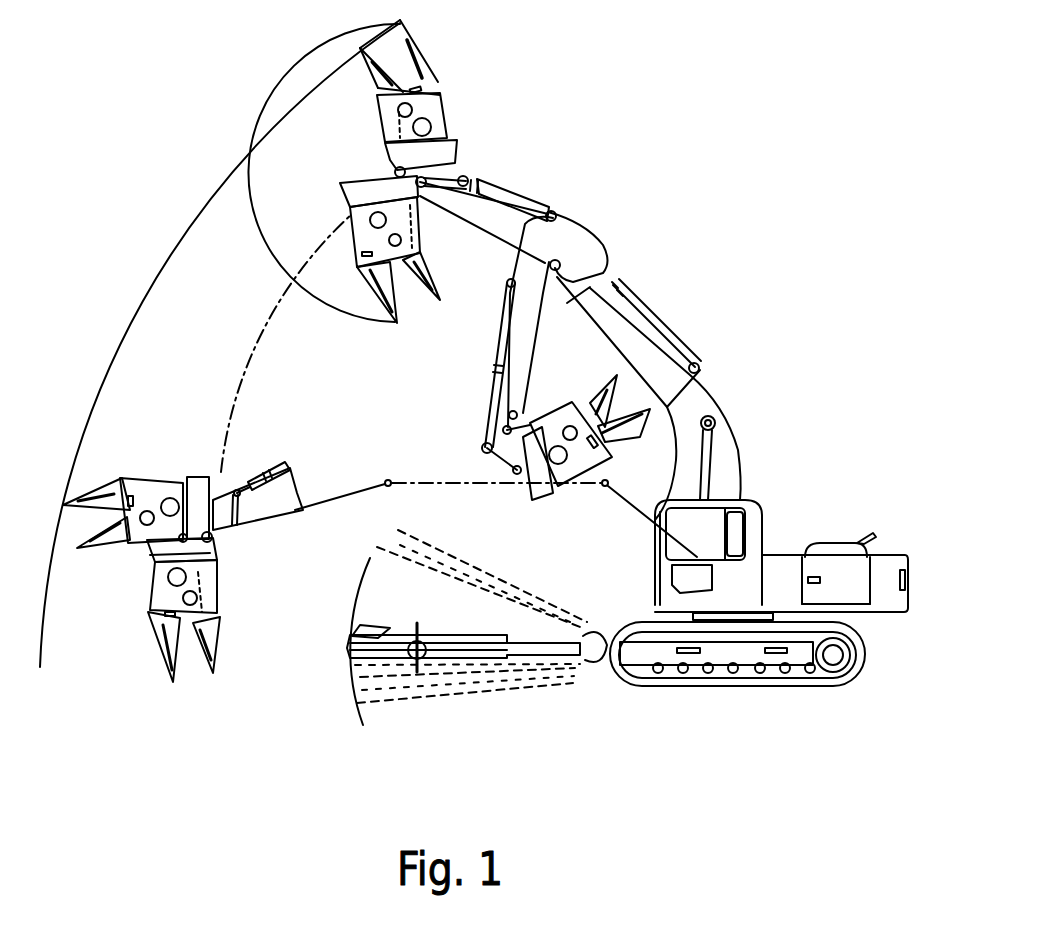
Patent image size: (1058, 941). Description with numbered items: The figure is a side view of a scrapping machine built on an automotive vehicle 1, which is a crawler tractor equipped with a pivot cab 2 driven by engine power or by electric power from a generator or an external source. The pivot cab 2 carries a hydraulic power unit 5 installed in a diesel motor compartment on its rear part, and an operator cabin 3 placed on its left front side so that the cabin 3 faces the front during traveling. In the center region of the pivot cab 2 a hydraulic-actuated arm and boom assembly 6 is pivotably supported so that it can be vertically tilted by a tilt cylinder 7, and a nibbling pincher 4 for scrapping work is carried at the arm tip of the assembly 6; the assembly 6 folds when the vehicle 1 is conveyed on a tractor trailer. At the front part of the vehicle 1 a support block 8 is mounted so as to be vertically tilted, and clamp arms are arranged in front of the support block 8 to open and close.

The automotive vehicle 1 is at (860, 667).
The pivot cab 2 is at (888, 598).
The operator cabin 3 is at (745, 500).
The nibbling pincher 4 is at (430, 79).
The hydraulic power unit 5 is at (864, 540).
The arm and boom assembly 6 is at (706, 397).
The tilt cylinder 7 is at (712, 460).
The support block 8 is at (595, 675).